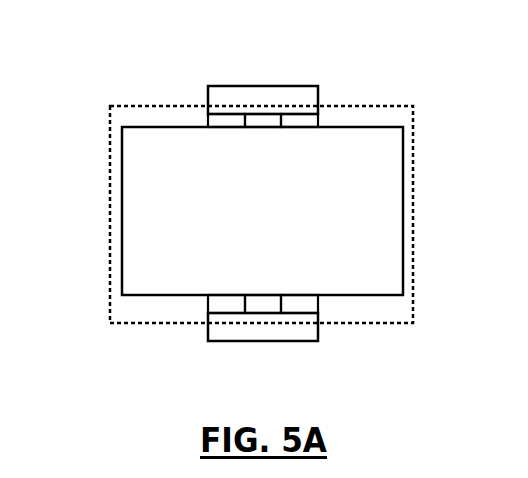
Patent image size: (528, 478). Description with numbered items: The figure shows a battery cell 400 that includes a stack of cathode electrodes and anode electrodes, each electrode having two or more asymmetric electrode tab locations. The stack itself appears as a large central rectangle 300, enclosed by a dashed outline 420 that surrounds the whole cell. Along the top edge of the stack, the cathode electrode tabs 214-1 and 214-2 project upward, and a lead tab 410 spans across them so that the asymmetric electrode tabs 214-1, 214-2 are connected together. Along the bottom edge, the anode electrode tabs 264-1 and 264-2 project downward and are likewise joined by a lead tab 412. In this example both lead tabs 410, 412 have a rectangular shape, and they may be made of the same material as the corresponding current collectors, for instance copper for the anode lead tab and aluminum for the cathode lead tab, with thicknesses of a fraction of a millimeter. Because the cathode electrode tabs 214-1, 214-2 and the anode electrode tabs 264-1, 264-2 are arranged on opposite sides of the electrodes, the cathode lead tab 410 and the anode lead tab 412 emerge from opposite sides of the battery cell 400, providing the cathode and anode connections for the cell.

The battery cell 400 is at (119, 52).
The lead tab 410 is at (271, 86).
The lead tab 412 is at (280, 341).
The cathode electrode tab 214-1 is at (208, 120).
The cathode electrode tab 214-2 is at (320, 118).
The anode electrode tab 264-1 is at (208, 305).
The anode electrode tab 264-2 is at (318, 305).
The semiconductor die 300 is at (403, 238).
The package boundary 420 is at (413, 277).